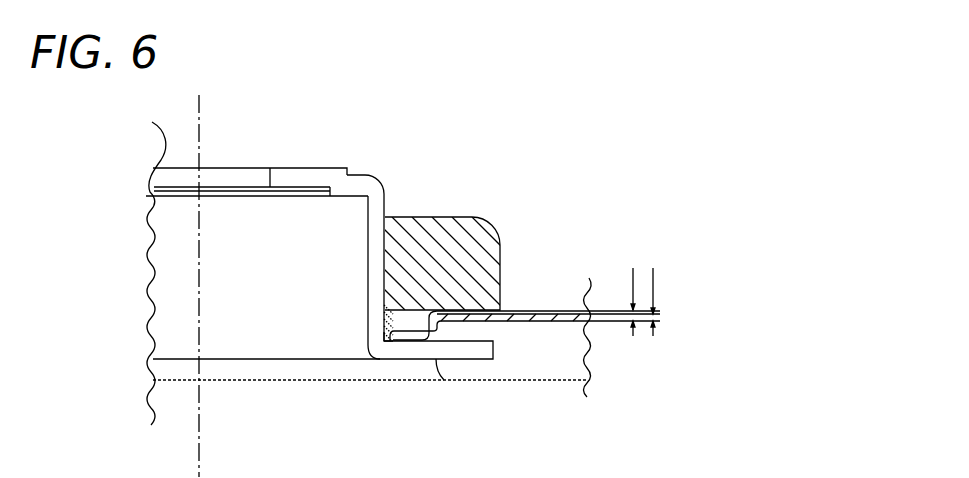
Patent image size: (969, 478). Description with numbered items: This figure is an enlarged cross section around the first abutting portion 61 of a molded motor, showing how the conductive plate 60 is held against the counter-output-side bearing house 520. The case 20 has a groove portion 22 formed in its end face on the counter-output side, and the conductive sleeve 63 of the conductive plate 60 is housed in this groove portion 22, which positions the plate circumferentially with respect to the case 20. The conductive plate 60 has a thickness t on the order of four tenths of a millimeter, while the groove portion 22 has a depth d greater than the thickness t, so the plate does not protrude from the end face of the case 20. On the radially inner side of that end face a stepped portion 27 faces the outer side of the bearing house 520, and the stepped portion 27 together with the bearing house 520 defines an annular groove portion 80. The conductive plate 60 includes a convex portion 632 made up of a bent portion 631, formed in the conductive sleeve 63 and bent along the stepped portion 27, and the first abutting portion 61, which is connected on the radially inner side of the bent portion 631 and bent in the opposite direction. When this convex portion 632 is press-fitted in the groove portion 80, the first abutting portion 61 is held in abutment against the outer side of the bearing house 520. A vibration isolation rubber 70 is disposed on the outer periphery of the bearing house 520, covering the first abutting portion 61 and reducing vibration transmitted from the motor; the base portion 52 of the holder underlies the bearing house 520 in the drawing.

The case 20 is at (570, 352).
The groove portion 22 is at (551, 310).
The stepped portion 27 is at (441, 323).
The holder base portion 52 is at (472, 352).
The counter-output-side bearing house 520 is at (370, 172).
The conductive plate 60 is at (519, 343).
The first abutting portion 61 is at (386, 343).
The conductive sleeve 63 is at (505, 321).
The bent portion 631 is at (433, 341).
The convex portion 632 is at (417, 337).
The vibration isolation rubber 70 is at (446, 217).
The groove portion 80 is at (412, 326).
The depth d is at (625, 300).
The thickness t is at (649, 300).